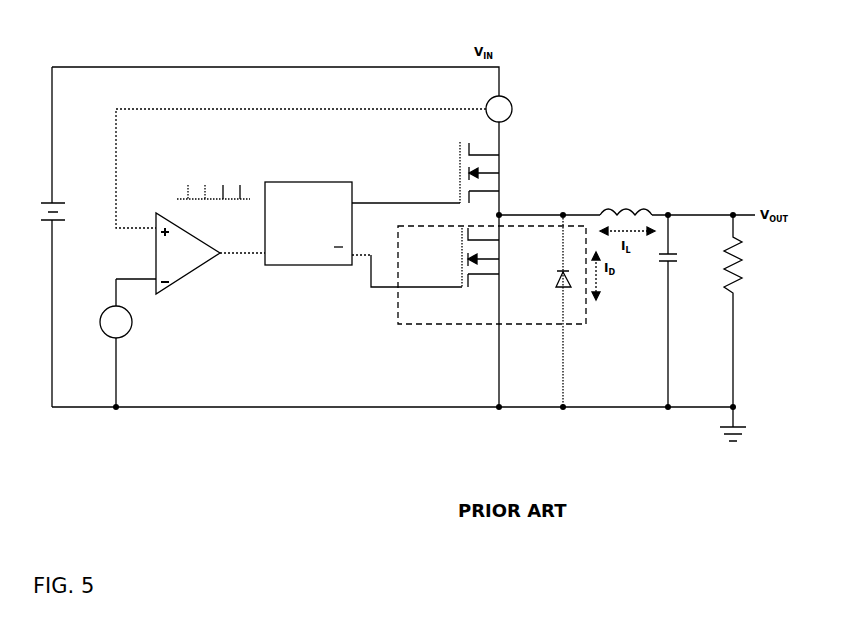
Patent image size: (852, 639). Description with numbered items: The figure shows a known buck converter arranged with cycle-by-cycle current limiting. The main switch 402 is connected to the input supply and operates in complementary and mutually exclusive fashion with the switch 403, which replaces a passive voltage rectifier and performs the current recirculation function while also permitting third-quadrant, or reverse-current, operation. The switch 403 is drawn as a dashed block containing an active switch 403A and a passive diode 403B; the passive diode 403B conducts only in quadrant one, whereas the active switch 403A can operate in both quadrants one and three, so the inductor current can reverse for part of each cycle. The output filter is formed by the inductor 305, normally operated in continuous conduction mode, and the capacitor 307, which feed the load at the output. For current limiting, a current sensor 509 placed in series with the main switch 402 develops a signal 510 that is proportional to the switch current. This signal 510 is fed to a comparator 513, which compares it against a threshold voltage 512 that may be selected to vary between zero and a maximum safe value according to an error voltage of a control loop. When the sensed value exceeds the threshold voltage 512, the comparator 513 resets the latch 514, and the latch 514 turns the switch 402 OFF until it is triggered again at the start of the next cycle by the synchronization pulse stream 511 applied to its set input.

The current sensor 509 is at (513, 97).
The signal 510 is at (299, 113).
The synchronization pulse stream 511 is at (206, 183).
The threshold voltage 512 is at (134, 343).
The comparator 513 is at (210, 253).
The latch 514 is at (363, 234).
The switch 402 is at (456, 172).
The switch 403 is at (480, 327).
The active switch 403A is at (455, 257).
The passive diode 403B is at (576, 266).
The inductor 305 is at (626, 202).
The capacitor 307 is at (685, 311).